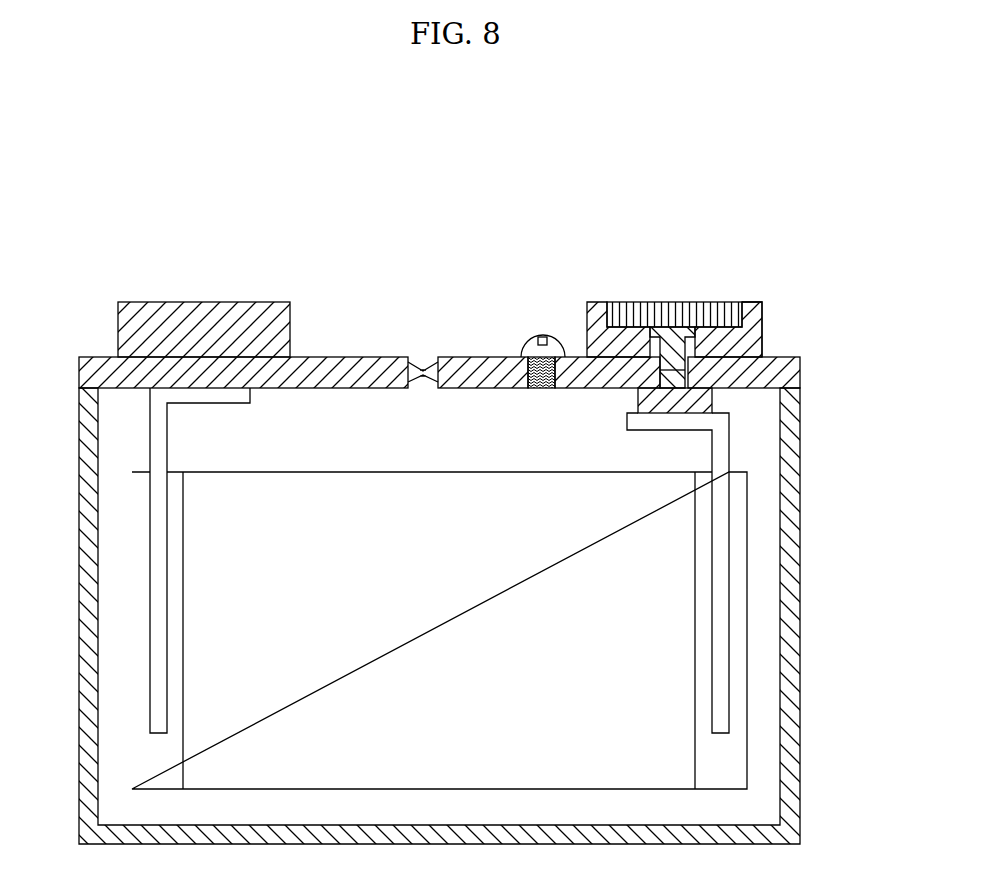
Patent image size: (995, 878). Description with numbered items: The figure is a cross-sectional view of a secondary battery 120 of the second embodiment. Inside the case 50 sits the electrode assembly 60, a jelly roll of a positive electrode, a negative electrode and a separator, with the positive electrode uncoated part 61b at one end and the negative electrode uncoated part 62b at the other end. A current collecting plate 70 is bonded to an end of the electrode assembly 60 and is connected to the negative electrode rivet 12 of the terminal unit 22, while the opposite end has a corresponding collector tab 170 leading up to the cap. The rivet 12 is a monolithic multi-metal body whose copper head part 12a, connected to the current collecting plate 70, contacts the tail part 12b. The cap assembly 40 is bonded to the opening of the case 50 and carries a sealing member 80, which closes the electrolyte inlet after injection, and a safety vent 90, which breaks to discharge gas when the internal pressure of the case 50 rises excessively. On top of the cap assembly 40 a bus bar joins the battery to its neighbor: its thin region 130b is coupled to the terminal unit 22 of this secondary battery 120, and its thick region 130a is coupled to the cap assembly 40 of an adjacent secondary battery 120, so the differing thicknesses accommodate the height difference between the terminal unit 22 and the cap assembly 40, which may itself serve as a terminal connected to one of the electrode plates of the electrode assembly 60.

The secondary battery 120 is at (728, 173).
The thick region 130a is at (200, 302).
The thin region 130b is at (642, 302).
The tail part 12b is at (686, 325).
The terminal unit 22 is at (752, 302).
The cap assembly 40 is at (783, 367).
The safety vent 90 is at (425, 355).
The sealing member 80 is at (543, 335).
The negative electrode rivet 12 is at (723, 402).
The head part 12a is at (637, 403).
The first current collector tab 170 is at (158, 430).
The current collecting plate 70 is at (713, 445).
The case 50 is at (795, 592).
The electrode assembly 60 is at (450, 645).
The positive electrode uncoated part 61b is at (173, 767).
The negative electrode uncoated part 62b is at (737, 767).